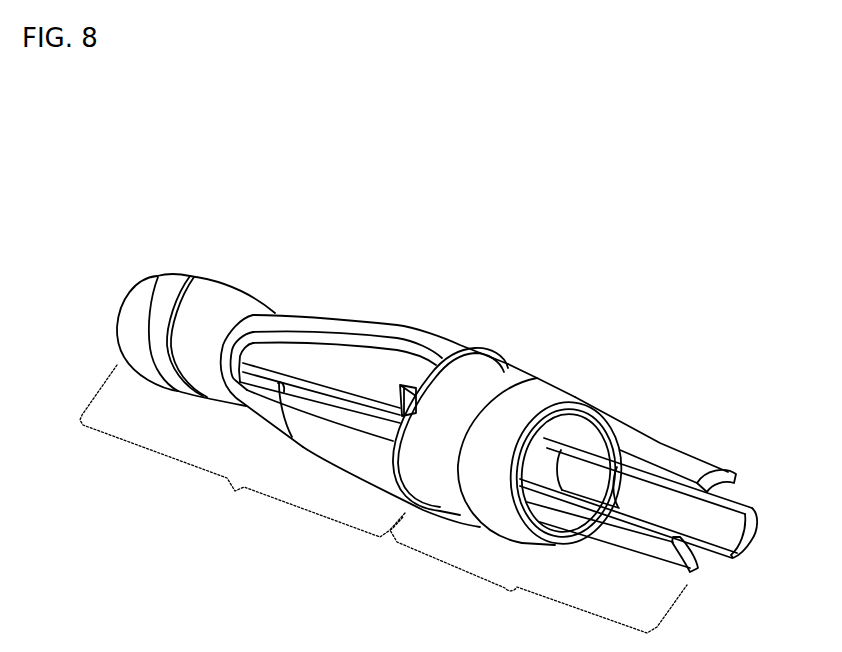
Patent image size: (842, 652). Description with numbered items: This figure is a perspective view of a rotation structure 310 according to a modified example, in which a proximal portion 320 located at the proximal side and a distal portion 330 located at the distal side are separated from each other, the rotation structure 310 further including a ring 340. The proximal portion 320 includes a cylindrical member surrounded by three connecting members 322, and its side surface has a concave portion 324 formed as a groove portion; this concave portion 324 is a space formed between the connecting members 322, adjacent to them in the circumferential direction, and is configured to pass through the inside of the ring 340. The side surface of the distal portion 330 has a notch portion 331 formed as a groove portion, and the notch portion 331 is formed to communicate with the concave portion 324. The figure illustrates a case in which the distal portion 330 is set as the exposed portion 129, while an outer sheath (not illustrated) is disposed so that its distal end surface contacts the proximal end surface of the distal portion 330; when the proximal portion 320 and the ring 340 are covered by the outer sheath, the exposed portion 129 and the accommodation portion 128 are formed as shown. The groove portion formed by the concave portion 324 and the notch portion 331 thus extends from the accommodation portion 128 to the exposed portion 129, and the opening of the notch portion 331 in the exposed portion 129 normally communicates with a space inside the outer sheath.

The rotation structure 310 is at (558, 245).
The proximal portion 320 is at (636, 435).
The connecting members 322 is at (680, 460).
The concave portion 324 is at (548, 463).
The distal portion 330 is at (431, 326).
The notch portion 331 is at (353, 368).
The ring 340 is at (510, 373).
The accommodation portion 128 is at (538, 573).
The exposed portion 129 is at (241, 451).